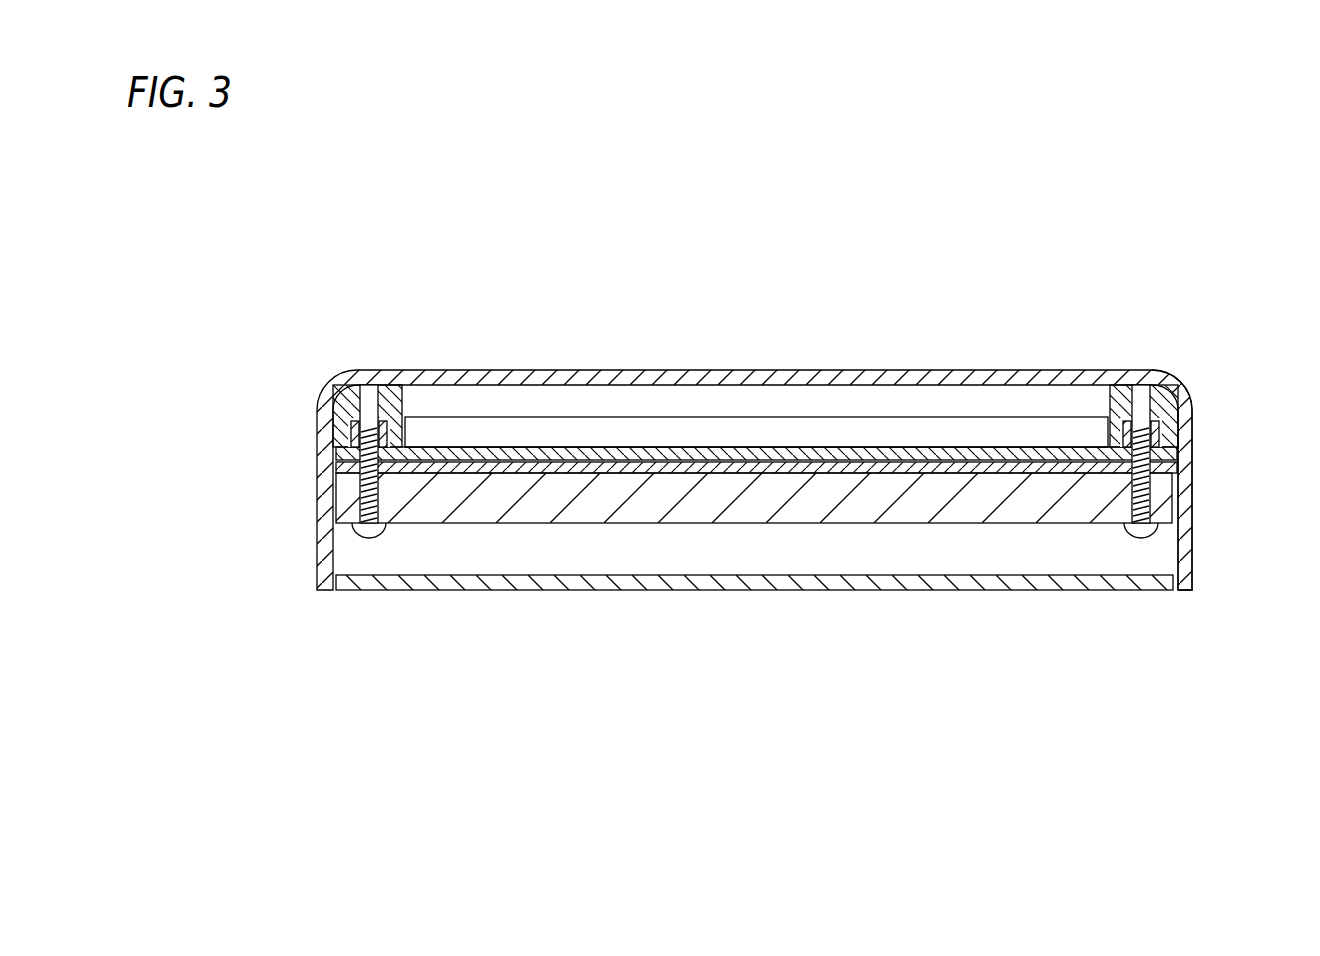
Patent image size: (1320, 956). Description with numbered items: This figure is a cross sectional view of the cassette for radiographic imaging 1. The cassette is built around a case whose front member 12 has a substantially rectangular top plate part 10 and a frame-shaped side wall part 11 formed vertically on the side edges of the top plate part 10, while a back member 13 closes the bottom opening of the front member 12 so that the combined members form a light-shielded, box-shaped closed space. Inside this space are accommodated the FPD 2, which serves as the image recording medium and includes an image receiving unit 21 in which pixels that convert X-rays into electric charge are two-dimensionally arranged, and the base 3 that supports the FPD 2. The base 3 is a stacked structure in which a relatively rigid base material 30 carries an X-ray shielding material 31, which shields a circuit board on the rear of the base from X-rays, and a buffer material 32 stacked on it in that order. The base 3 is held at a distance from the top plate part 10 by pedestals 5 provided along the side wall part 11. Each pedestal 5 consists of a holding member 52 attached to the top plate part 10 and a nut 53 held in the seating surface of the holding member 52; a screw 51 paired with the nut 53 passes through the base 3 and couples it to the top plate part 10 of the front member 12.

The cassette for radiographic imaging 1 is at (1203, 243).
The FPD 2 is at (756, 379).
The base 3 is at (756, 574).
The pedestal 5 is at (754, 519).
The top plate part 10 is at (736, 378).
The side wall part 11 is at (1186, 566).
The front member 12 is at (1181, 373).
The back member 13 is at (992, 598).
The image receiving unit 21 is at (870, 435).
The base material 30 is at (681, 500).
The X-ray shielding material 31 is at (620, 468).
The buffer material 32 is at (558, 455).
The screw 51 is at (369, 540).
The holding member 52 is at (345, 410).
The nut 53 is at (350, 427).